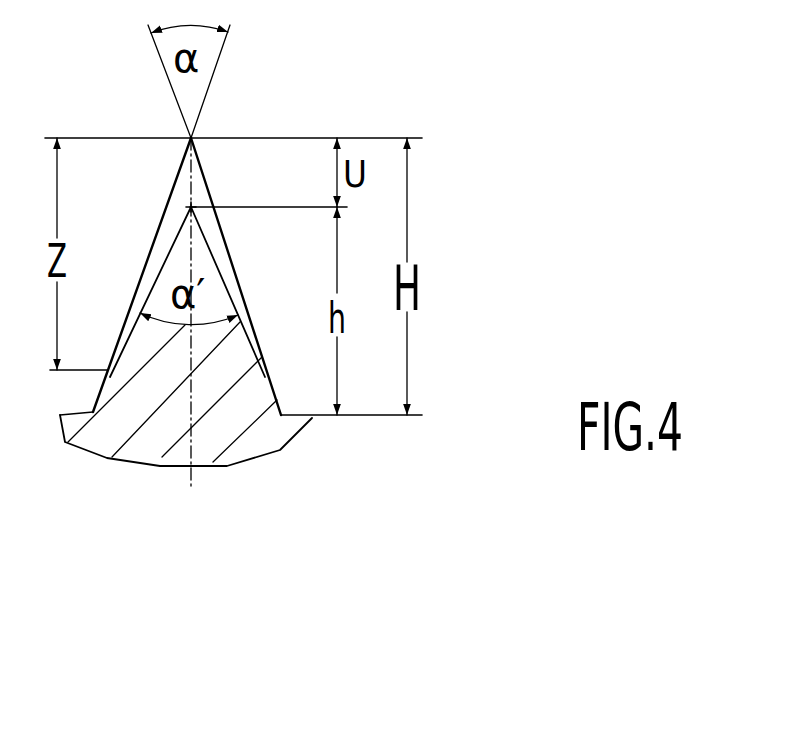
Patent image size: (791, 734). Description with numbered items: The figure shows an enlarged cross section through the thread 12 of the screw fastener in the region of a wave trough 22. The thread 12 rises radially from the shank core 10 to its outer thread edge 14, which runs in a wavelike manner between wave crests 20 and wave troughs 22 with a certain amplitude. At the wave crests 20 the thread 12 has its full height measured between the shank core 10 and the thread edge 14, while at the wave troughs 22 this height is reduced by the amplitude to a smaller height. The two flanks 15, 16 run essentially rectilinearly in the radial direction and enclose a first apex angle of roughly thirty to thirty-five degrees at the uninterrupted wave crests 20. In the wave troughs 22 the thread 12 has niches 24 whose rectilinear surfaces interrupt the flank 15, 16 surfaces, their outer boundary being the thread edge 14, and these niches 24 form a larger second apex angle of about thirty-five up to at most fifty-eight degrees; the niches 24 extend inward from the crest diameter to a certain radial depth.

The shank core 10 is at (284, 428).
The thread 12 is at (219, 174).
The outer thread edge 14 is at (185, 190).
The flank 15 is at (233, 265).
The flank 16 is at (152, 249).
The wave crest 20 is at (197, 134).
The wave trough 22 is at (197, 204).
The niche 24 is at (163, 262).